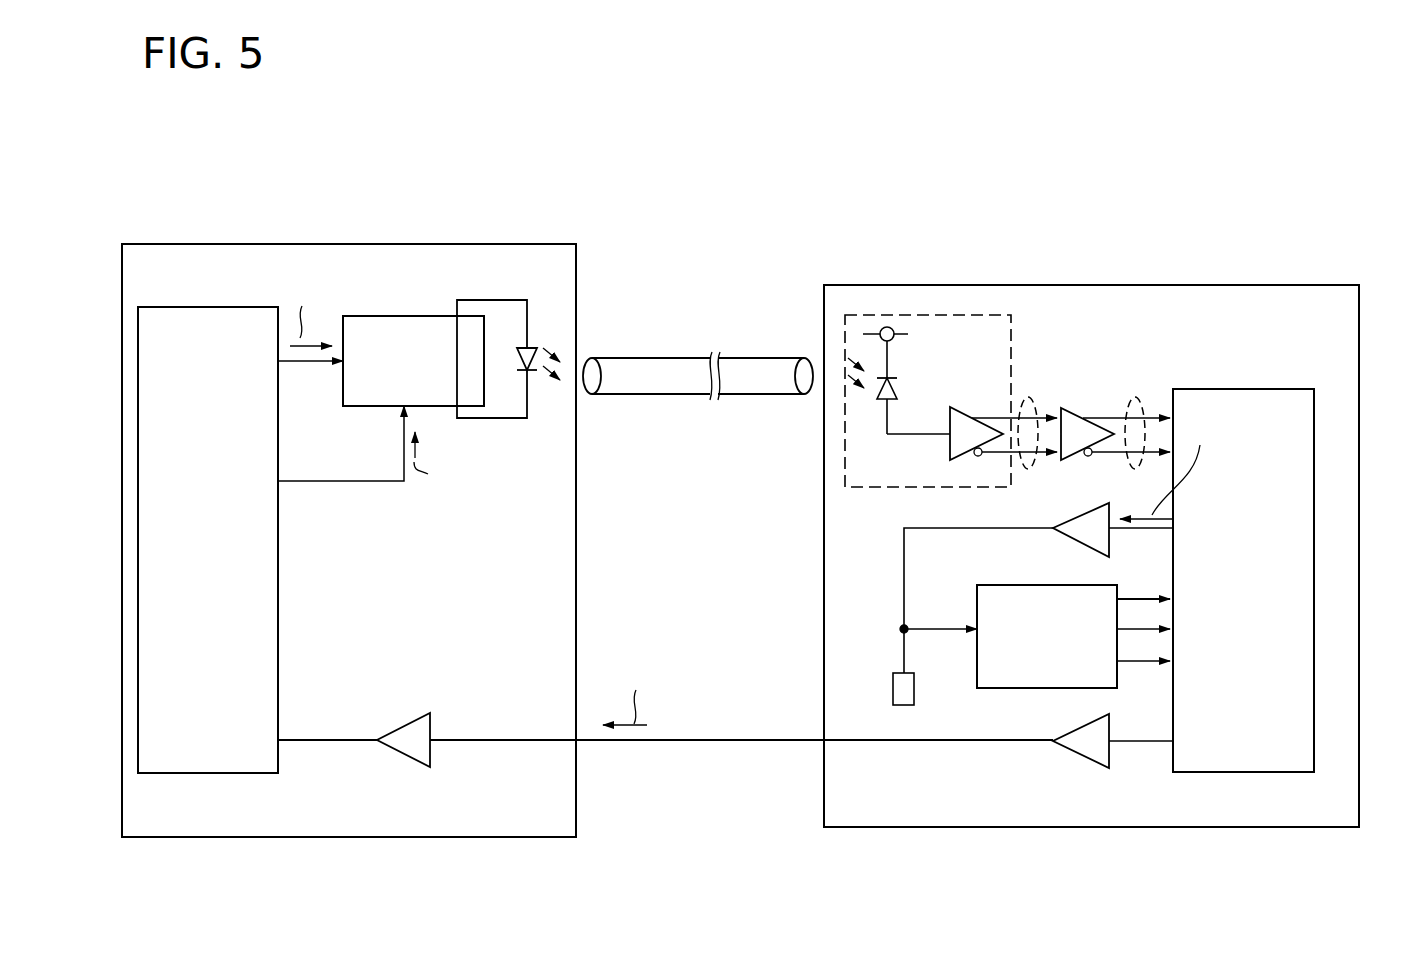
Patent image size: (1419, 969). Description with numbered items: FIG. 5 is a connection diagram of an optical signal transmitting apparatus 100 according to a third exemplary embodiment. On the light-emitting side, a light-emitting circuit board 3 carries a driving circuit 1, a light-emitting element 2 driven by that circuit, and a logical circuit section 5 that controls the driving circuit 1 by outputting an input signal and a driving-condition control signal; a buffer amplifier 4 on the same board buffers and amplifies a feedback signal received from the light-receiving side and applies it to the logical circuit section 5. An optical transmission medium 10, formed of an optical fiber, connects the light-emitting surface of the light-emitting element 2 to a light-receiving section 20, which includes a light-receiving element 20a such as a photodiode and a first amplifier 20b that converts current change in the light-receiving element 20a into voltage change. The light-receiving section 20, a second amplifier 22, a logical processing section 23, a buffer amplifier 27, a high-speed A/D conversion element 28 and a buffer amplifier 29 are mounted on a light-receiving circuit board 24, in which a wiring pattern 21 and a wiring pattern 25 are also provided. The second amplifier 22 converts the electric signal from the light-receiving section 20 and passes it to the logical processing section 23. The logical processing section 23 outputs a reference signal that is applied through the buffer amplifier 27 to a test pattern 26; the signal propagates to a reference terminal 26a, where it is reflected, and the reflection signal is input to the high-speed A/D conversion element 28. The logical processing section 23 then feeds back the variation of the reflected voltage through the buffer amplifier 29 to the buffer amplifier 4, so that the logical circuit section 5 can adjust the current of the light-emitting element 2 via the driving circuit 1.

The optical signal transmitting apparatus 100 is at (567, 177).
The light-emitting circuit board 3 is at (355, 244).
The driving circuit 1 is at (430, 316).
The light-emitting element 2 is at (530, 350).
The buffer amplifier 4 is at (405, 725).
The logical circuit section 5 is at (279, 592).
The optical transmission medium 10 is at (684, 368).
The light-receiving section 20 is at (892, 310).
The light-receiving element 20a is at (880, 402).
The first amplifier 20b is at (962, 442).
The wiring pattern 21 is at (1022, 465).
The second amplifier 22 is at (1067, 408).
The wiring pattern 25 is at (1136, 395).
The light-receiving circuit board 24 is at (1327, 285).
The logical processing section 23 is at (1314, 576).
The test pattern 26 is at (903, 576).
The reference terminal 26a is at (893, 690).
The buffer amplifier 27 is at (1098, 547).
The high-speed A/D conversion element 28 is at (992, 690).
The buffer amplifier 29 is at (1089, 750).